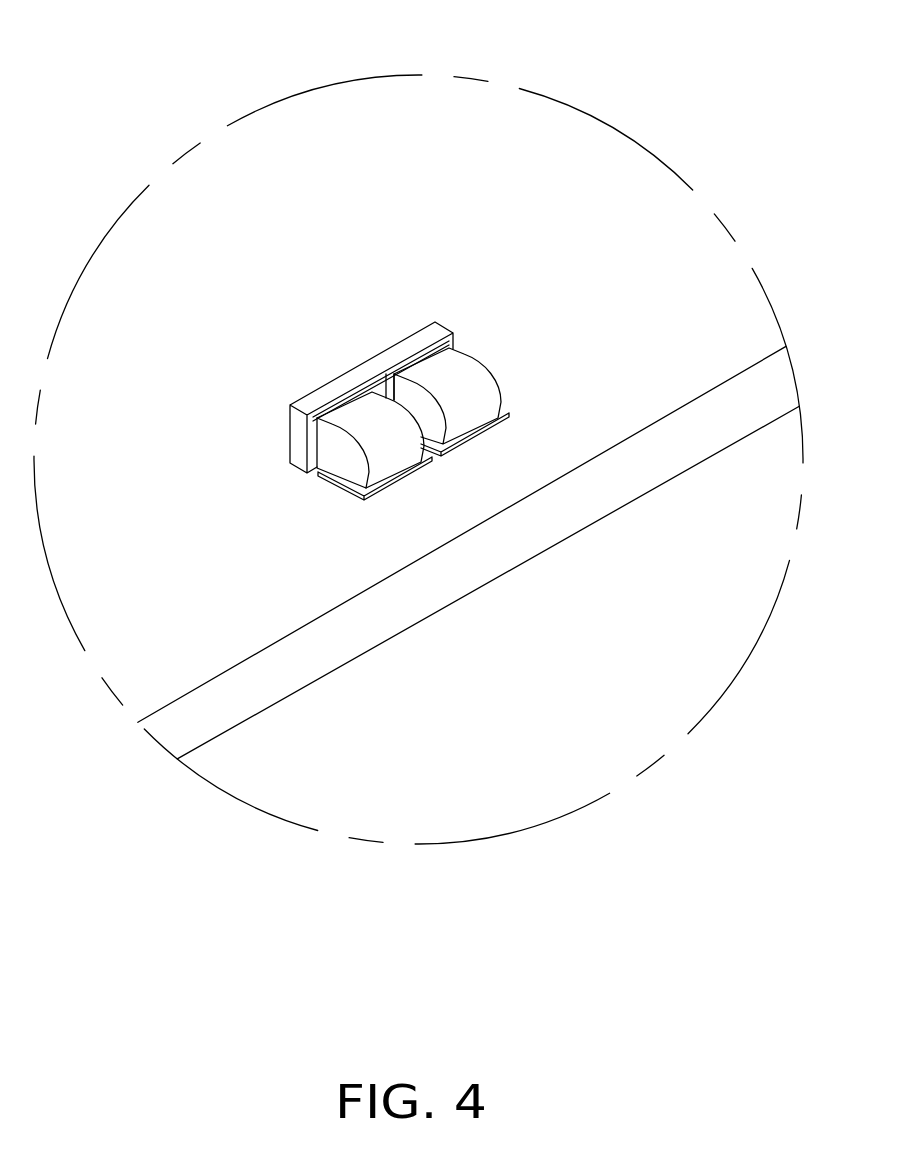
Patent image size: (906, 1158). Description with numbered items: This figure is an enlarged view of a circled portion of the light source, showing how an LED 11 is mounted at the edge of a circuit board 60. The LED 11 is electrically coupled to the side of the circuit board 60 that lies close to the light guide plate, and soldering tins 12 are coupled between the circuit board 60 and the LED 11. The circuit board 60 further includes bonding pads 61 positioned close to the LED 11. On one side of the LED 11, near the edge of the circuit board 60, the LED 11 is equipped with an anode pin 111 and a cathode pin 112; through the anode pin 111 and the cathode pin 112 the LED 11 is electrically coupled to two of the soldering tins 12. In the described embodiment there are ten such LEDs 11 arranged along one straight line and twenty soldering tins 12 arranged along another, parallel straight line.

The LED 11 is at (322, 393).
The anode pin 111 is at (372, 388).
The cathode pin 112 is at (390, 378).
The soldering tin 12 is at (390, 447).
The circuit board 60 is at (205, 717).
The bonding pad 61 is at (358, 493).